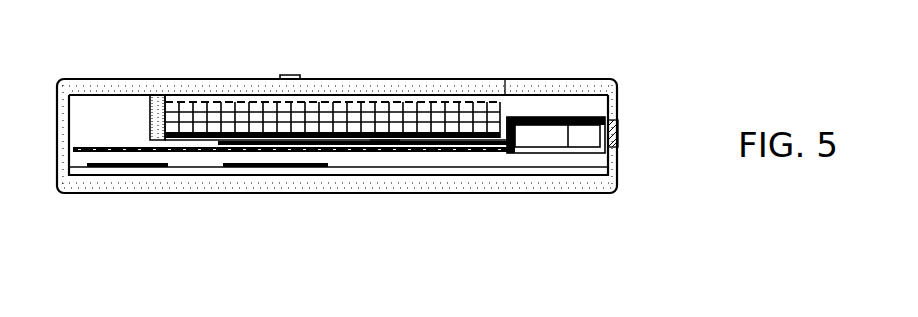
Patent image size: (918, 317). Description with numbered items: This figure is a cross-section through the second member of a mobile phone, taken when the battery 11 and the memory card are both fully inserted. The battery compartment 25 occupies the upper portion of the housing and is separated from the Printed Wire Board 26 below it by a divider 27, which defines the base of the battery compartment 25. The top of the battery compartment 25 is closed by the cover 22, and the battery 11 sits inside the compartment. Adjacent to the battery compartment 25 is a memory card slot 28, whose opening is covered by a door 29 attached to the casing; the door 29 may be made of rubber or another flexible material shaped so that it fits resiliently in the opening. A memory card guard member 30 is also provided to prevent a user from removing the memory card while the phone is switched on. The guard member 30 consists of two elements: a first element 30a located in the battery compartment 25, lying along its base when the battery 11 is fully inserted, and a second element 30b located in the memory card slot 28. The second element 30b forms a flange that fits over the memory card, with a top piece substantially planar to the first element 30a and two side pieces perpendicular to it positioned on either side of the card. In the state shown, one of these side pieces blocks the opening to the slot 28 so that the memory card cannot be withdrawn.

The battery 11 is at (232, 132).
The cover 22 is at (307, 87).
The battery compartment 25 is at (388, 102).
The Printed Wire Board 26 is at (253, 168).
The divider 27 is at (337, 150).
The memory card slot 28 is at (597, 127).
The door 29 is at (623, 130).
The memory card guard member 30 is at (513, 147).
The first element 30a is at (382, 140).
The second element 30b is at (568, 147).